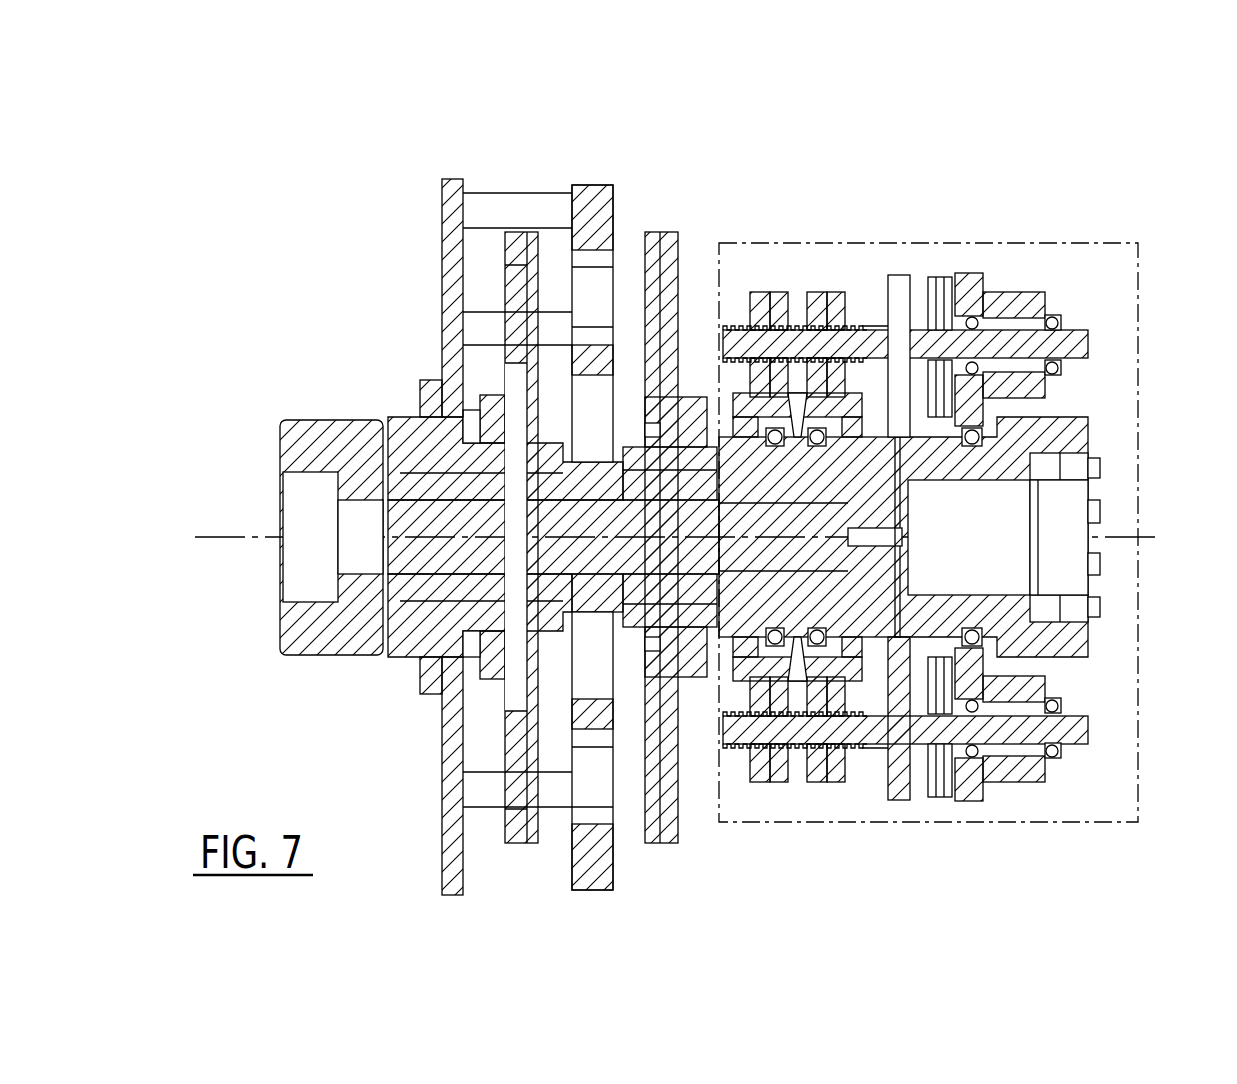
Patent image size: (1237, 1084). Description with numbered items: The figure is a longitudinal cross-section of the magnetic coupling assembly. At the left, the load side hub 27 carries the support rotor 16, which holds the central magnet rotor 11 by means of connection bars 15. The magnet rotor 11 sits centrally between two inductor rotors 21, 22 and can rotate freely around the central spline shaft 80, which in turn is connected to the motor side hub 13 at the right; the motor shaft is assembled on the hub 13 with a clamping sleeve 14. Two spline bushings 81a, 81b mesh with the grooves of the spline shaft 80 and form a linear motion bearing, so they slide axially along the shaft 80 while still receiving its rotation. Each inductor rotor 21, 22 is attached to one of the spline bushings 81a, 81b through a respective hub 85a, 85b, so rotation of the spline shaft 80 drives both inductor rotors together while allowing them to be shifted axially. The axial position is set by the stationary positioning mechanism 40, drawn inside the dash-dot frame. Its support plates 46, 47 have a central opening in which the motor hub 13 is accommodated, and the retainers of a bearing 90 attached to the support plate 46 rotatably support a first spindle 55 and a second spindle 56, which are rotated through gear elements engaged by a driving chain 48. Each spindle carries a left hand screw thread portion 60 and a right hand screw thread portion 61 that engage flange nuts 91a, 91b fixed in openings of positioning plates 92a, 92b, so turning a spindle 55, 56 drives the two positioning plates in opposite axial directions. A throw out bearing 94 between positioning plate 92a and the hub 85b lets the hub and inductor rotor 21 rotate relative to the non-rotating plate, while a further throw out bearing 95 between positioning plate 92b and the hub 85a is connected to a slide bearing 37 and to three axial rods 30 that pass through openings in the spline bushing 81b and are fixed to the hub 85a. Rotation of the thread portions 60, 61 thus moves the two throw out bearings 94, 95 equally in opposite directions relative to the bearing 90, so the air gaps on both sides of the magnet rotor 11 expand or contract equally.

The magnet rotor 11 is at (583, 183).
The motor side hub 13 is at (1027, 432).
The clamping sleeve 14 is at (1052, 497).
The connection bars 15 is at (482, 212).
The support rotor 16 is at (447, 197).
The inductor rotor 21 is at (667, 257).
The inductor rotor 22 is at (514, 250).
The load side hub 27 is at (315, 437).
The axial rods 30 is at (598, 603).
The slide bearing 37 is at (845, 620).
The positioning mechanism 40 is at (1140, 281).
The support plate 46 is at (976, 273).
The support plate 47 is at (899, 270).
The driving chain 48 is at (938, 278).
The first spindle 55 is at (872, 327).
The second spindle 56 is at (865, 745).
The left hand screw thread portion 60 is at (740, 330).
The right hand screw thread portion 61 is at (853, 337).
The central spline shaft 80 is at (420, 512).
The spline bushing 81a is at (440, 487).
The spline bushing 81b is at (647, 473).
The hub 85a is at (443, 450).
The hub 85b is at (697, 457).
The bearing 90 is at (1055, 291).
The flange nut 91a is at (755, 291).
The flange nut 91b is at (839, 291).
The positioning plate 92a is at (777, 291).
The positioning plate 92b is at (818, 291).
The throw out bearing 94 is at (778, 440).
The throw out bearing 95 is at (820, 437).